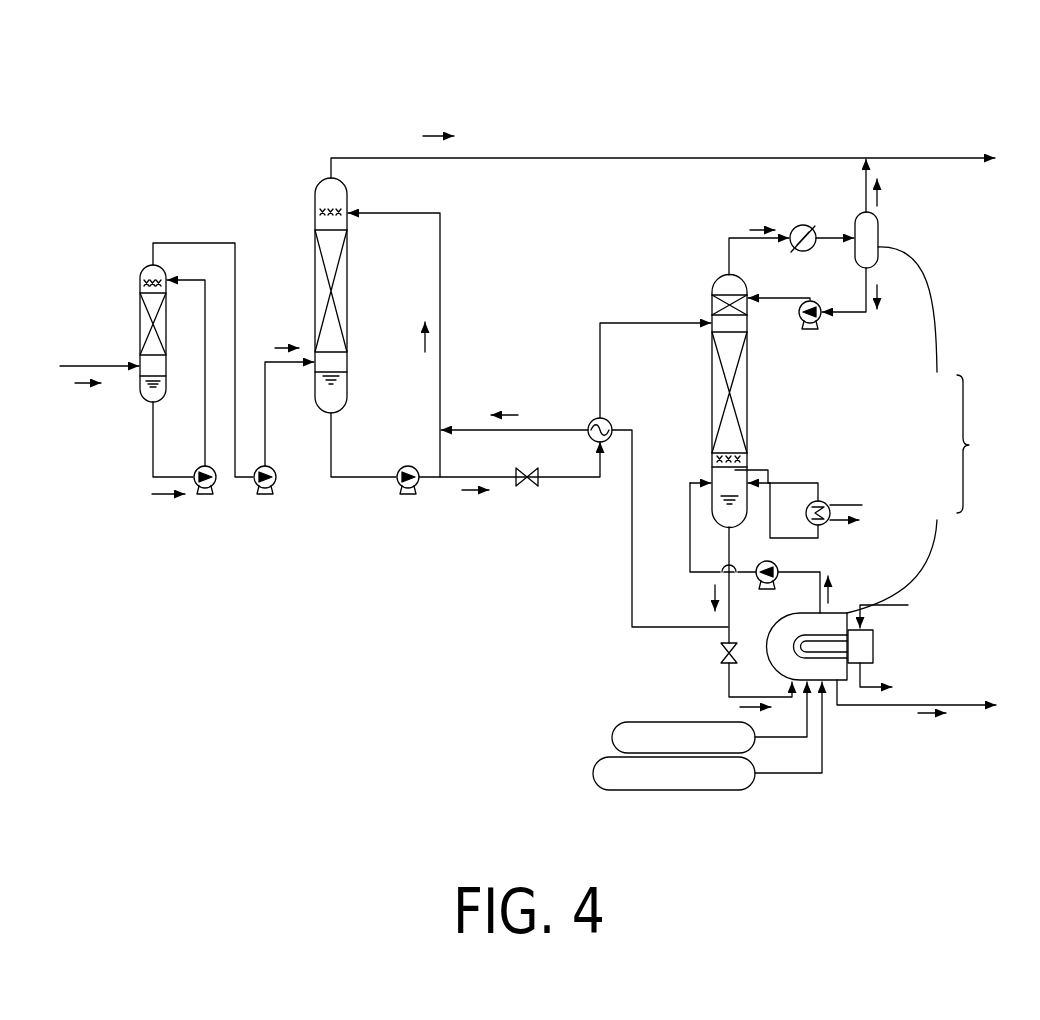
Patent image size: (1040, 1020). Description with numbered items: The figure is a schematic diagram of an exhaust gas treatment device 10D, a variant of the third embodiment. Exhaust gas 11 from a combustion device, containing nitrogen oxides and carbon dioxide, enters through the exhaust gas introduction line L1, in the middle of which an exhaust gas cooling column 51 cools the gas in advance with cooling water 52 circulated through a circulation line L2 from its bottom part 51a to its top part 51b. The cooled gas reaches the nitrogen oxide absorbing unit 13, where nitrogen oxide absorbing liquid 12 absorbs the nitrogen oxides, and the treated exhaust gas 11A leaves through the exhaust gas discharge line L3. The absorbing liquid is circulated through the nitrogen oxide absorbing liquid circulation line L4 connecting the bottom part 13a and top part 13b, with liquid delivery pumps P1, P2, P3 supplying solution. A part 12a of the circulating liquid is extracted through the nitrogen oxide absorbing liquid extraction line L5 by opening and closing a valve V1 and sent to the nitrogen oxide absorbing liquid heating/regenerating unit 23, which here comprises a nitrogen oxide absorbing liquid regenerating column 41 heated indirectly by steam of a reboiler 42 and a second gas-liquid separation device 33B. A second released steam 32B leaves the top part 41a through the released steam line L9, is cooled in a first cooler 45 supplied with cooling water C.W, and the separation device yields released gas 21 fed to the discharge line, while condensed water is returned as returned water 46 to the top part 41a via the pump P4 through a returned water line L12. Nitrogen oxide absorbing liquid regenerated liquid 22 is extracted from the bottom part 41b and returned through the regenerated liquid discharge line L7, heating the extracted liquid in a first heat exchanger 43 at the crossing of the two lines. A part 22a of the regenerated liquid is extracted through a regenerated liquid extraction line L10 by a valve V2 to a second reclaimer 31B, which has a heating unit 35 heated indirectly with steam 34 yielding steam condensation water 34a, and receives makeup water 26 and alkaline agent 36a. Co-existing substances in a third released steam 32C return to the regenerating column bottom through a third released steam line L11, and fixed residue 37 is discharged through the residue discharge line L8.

The exhaust gas treatment device 10D is at (525, 60).
The exhaust gas 11 is at (86, 386).
The exhaust gas 11A is at (432, 132).
The nitrogen oxide absorbing liquid 12 is at (424, 350).
The part of the nitrogen oxide absorbing liquid 12a is at (470, 494).
The nitrogen oxide absorbing unit 13 is at (307, 172).
The bottom part 13a is at (349, 395).
The top part 13b is at (314, 194).
The released gas 21 is at (880, 194).
The nitrogen oxide absorbing liquid regenerated liquid 22 is at (516, 412).
The part of the nitrogen oxide absorbing liquid regenerated liquid 22a is at (740, 707).
The nitrogen oxide absorbing liquid heating/regenerating unit 23 is at (985, 444).
The makeup water 26 is at (593, 773).
The second reclaimer 31B is at (901, 550).
The second released steam 32B is at (754, 226).
The third released steam 32C is at (832, 592).
The second gas-liquid separation device 33B is at (917, 325).
The steam 34 is at (858, 504).
The steam condensation water 34a is at (864, 522).
The heating unit 35 is at (875, 648).
The alkaline agent 36a is at (612, 737).
The first reclaimer residue 37 is at (932, 718).
The nitrogen oxide absorbing liquid regenerating column 41 is at (752, 404).
The top part 41a is at (712, 292).
The bottom part 41b is at (735, 528).
The reboiler 42 is at (822, 501).
The first heat exchanger 43 is at (609, 421).
The first cooler 45 is at (803, 224).
The returned water 46 is at (880, 292).
The exhaust gas cooling column 51 is at (139, 240).
The bottom part 51a is at (146, 396).
The top part 51b is at (142, 271).
The cooling water 52 is at (168, 498).
The exhaust gas introduction line L1 is at (196, 242).
The circulation line L2 is at (150, 476).
The exhaust gas discharge line L3 is at (558, 157).
The nitrogen oxide absorbing liquid circulation line L4 is at (352, 480).
The nitrogen oxide absorbing liquid extraction line L5 is at (580, 480).
The regenerated liquid discharge line L7 is at (463, 428).
The residue discharge line L8 is at (968, 709).
The released steam line L9 is at (732, 237).
The regenerated liquid extraction line L10 is at (727, 675).
The third released steam line L11 is at (689, 539).
The returned water line L12 is at (850, 313).
The liquid delivery pump P1 is at (204, 497).
The liquid delivery pump P2 is at (264, 497).
The liquid delivery pump P3 is at (406, 497).
The pump P4 is at (810, 332).
The valve V1 is at (528, 490).
The valve V2 is at (720, 653).
The cooling water C.W is at (833, 215).